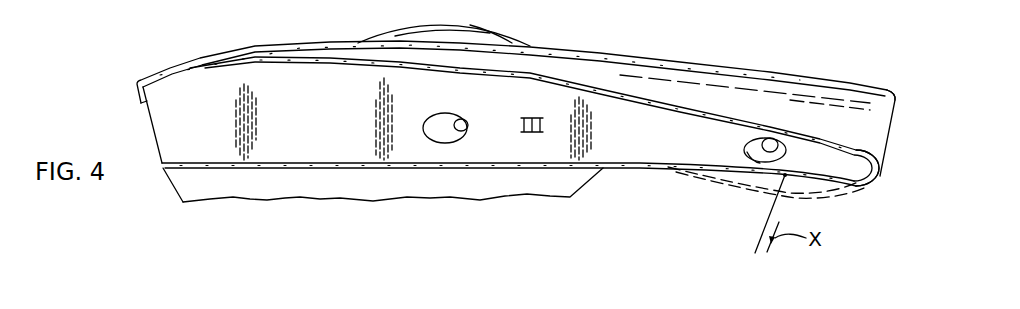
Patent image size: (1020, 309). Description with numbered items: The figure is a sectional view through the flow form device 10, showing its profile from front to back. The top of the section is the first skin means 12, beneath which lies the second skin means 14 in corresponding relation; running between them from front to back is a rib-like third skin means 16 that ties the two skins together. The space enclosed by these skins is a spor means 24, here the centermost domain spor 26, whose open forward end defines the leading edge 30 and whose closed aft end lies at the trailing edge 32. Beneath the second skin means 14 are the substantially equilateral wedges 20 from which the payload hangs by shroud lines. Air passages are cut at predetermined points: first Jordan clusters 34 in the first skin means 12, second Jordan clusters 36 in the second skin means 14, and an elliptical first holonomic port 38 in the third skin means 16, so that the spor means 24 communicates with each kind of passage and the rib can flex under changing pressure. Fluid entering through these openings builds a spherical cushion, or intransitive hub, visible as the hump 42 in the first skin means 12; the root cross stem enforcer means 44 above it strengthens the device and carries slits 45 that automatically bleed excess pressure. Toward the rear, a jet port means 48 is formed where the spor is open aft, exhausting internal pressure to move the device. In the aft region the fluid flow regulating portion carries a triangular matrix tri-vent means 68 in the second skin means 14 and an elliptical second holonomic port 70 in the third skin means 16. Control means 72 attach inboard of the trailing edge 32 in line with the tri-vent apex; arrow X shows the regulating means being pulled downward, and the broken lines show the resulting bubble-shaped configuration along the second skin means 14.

The flow form device 10 is at (650, 190).
The first skin means 12 is at (240, 58).
The second skin means 14 is at (224, 168).
The third skin means 16 is at (296, 108).
The wedges 20 is at (453, 192).
The spor means 24 is at (197, 133).
The domain spor 26 is at (665, 60).
The leading edge 30 is at (137, 94).
The trailing edge 32 is at (880, 184).
The first Jordan clusters 34 is at (613, 98).
The second Jordan clusters 36 is at (300, 169).
The first holonomic ports 38 is at (461, 120).
The hump 42 is at (406, 27).
The root cross stem enforcer means 44 is at (432, 33).
The slits 45 is at (452, 36).
The jet port means 48 is at (897, 99).
The matrix tri-vent means 68 is at (744, 147).
The second holonomic ports 70 is at (770, 140).
The control means 72 is at (766, 211).